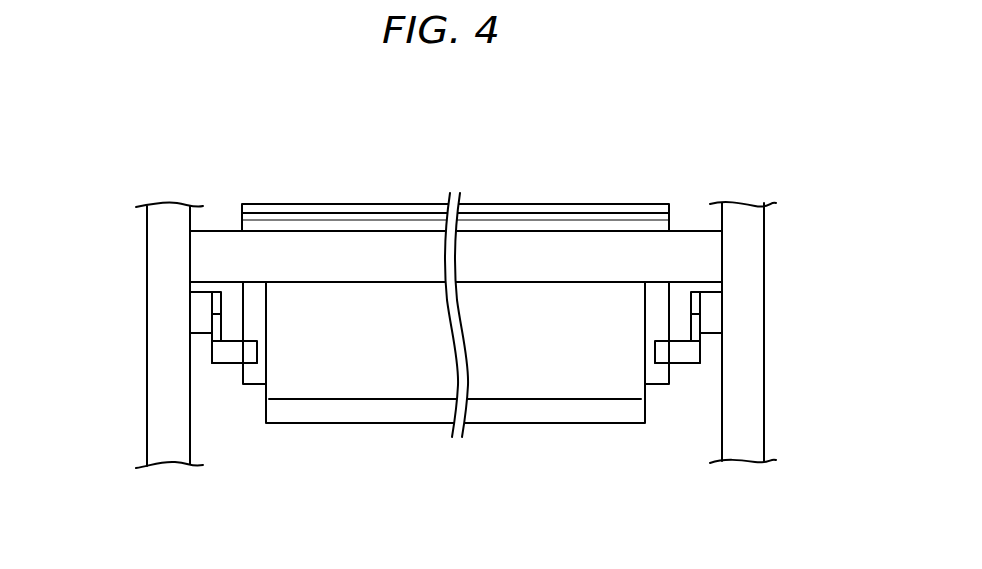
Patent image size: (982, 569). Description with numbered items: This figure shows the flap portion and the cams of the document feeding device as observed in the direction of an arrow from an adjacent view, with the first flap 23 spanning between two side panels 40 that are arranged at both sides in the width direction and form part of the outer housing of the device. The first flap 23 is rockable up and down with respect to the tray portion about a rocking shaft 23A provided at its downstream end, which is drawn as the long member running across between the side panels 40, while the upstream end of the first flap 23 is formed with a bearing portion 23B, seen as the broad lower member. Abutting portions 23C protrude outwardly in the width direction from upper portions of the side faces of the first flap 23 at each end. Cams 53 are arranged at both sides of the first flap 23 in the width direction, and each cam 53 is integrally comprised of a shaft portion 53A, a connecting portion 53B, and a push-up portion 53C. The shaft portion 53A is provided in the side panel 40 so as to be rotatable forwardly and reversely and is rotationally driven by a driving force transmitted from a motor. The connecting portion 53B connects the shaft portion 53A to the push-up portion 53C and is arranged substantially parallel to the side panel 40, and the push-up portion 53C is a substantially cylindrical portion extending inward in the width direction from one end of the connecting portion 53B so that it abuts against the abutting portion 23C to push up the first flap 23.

The first flap 23 is at (456, 302).
The rocking shaft 23A is at (524, 243).
The bearing portion 23B is at (530, 413).
The abutting portion 23C is at (257, 385).
The side panel 40 is at (160, 244).
The cam 53 is at (452, 345).
The shaft portion 53A is at (197, 315).
The connecting portion 53B is at (212, 353).
The push-up portion 53C is at (237, 358).